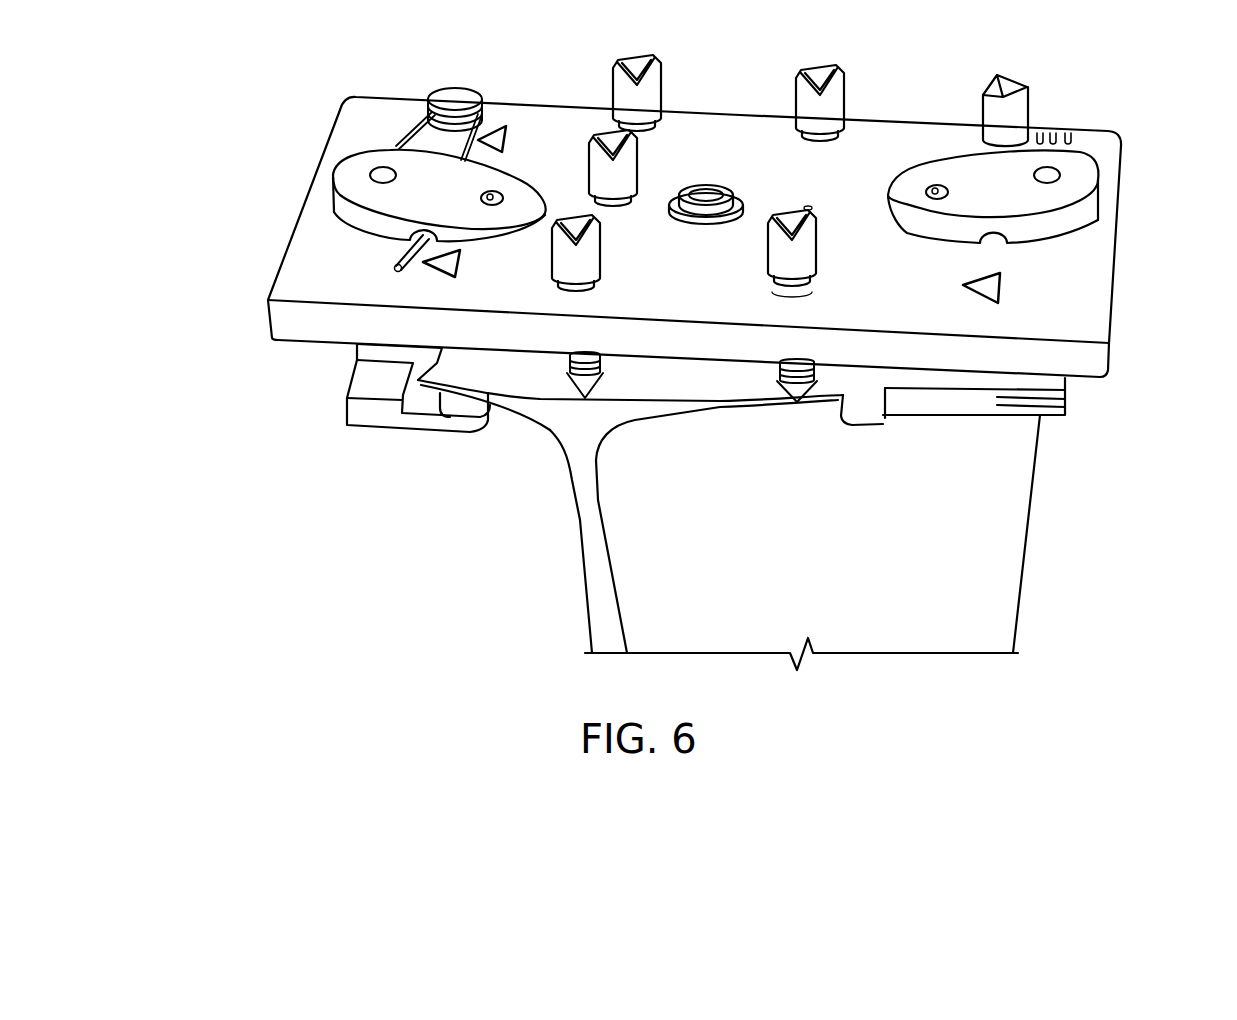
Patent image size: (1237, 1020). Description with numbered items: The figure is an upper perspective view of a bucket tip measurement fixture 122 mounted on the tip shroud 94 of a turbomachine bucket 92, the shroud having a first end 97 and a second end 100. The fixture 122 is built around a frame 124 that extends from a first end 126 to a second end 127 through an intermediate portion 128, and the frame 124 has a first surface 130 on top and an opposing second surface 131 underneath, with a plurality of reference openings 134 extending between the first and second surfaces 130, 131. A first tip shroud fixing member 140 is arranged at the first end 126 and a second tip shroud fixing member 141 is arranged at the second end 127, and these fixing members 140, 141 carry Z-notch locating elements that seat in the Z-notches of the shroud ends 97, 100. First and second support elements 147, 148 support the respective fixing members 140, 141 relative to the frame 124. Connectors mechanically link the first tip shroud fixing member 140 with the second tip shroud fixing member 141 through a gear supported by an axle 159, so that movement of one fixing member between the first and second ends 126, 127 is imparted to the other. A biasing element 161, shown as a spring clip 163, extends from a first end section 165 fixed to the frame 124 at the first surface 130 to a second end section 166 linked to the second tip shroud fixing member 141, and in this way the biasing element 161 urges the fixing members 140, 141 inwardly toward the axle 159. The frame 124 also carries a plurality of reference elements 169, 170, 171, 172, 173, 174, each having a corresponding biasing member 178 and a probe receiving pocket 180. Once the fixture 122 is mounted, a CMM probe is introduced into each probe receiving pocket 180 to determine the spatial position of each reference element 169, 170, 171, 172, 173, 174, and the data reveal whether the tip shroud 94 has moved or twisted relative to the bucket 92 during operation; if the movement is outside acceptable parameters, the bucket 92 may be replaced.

The turbomachine bucket 92 is at (1013, 631).
The tip shroud 94 is at (580, 443).
The first end 97 is at (885, 382).
The second end 100 is at (527, 414).
The bucket tip measurement fixture 122 is at (268, 153).
The frame 124 is at (545, 103).
The first end 126 is at (1118, 320).
The second end 127 is at (278, 262).
The intermediate portion 128 is at (733, 127).
The first surface 130 is at (778, 190).
The second surface 131 is at (690, 385).
The reference openings 134 is at (815, 300).
The first tip shroud fixing member 140 is at (1003, 397).
The second tip shroud fixing member 141 is at (377, 414).
The first support element 147 is at (1029, 242).
The second support element 148 is at (488, 259).
The axle 159 is at (717, 230).
The biasing element 161 is at (371, 117).
The spring clip 163 is at (438, 92).
The first end section 165 is at (347, 205).
The second end section 166 is at (394, 268).
The reference element 169 is at (975, 133).
The reference element 170 is at (789, 121).
The reference element 171 is at (807, 269).
The reference element 172 is at (654, 117).
The reference element 173 is at (615, 183).
The reference element 174 is at (602, 272).
The biasing member 178 is at (583, 378).
The probe receiving pocket 180 is at (808, 205).